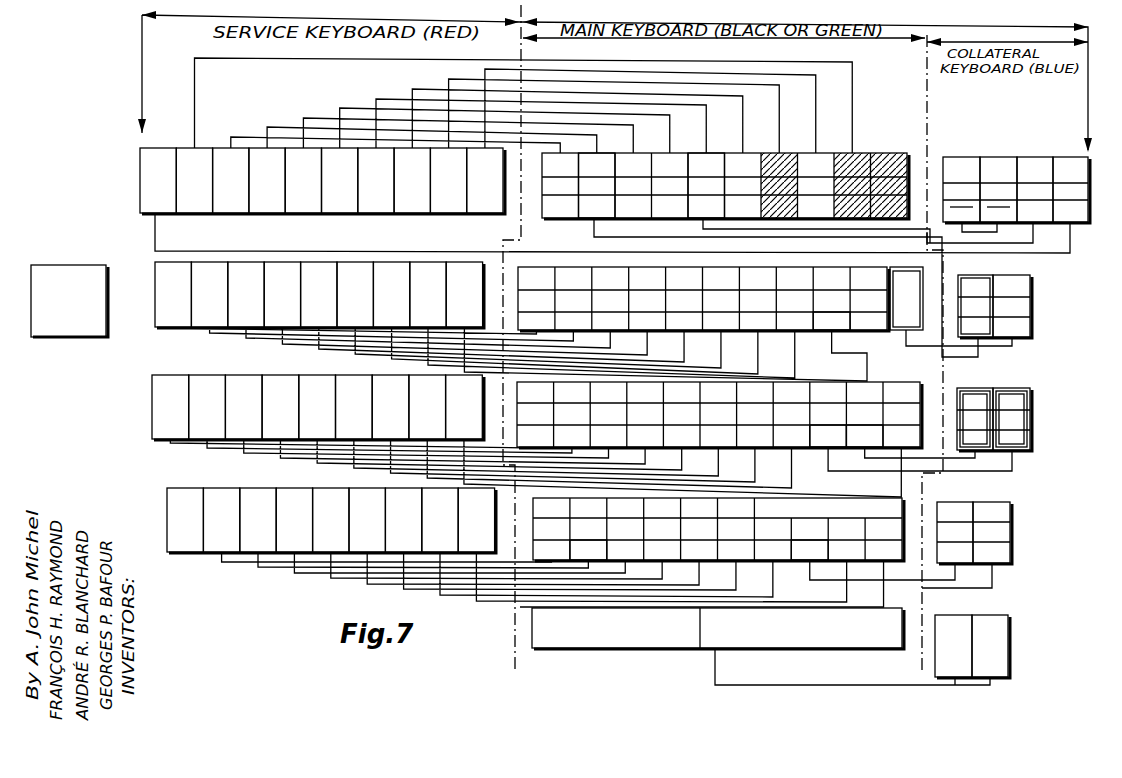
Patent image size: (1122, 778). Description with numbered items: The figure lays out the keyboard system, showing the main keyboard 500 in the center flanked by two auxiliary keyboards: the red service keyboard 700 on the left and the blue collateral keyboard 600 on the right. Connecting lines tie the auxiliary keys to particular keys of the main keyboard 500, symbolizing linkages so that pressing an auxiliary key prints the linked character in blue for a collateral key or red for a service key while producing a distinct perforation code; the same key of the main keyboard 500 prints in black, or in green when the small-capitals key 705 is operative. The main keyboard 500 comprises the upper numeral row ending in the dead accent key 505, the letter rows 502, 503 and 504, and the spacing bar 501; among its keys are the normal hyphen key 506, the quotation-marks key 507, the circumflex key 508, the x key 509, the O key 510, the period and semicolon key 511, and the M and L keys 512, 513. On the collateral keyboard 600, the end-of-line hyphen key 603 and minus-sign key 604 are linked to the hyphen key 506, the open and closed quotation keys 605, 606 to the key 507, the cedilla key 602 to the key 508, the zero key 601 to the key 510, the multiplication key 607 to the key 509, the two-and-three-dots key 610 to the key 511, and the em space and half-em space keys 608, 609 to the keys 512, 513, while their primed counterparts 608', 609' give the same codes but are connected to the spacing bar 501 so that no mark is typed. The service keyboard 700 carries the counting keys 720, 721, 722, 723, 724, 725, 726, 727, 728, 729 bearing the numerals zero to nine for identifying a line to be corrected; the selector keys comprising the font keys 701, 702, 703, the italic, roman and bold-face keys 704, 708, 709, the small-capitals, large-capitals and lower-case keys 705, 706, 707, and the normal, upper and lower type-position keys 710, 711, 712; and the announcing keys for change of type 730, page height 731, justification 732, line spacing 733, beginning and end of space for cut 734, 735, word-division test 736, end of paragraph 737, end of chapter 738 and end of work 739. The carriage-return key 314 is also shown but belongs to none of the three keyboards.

The carriage-return key 314 is at (97, 329).
The counting key 720 is at (150, 209).
The counting key 721 is at (190, 207).
The counting key 722 is at (234, 205).
The counting key 723 is at (271, 208).
The counting key 724 is at (307, 206).
The counting key 725 is at (343, 208).
The counting key 726 is at (380, 206).
The counting key 727 is at (416, 208).
The counting key 728 is at (453, 206).
The counting key 729 is at (490, 207).
The font selector key 701 is at (165, 320).
The font selector key 702 is at (206, 318).
The font selector key 703 is at (239, 318).
The word-division-test announcing key 736 is at (292, 289).
The beginning-of-space-for-cut announcing key 734 is at (328, 296).
The end-of-space-for-cut announcing key 735 is at (366, 282).
The lower type-position selector key 712 is at (404, 300).
The bold-face selector key 709 is at (440, 287).
The small-capitals selector key 705 is at (476, 299).
The height-of-page announcing key 731 is at (250, 402).
The end-of-paragraph announcing key 737 is at (289, 409).
The end-of-chapter announcing key 738 is at (327, 402).
The end-of-work announcing key 739 is at (364, 414).
The upper type-position selector key 711 is at (396, 401).
The italic selector key 704 is at (438, 406).
The large-capitals selector key 706 is at (474, 411).
The change-in-type announcing key 730 is at (307, 517).
The justification announcing key 732 is at (343, 525).
The line-spacing announcing key 733 is at (380, 517).
The normal type-position selector key 710 is at (415, 525).
The roman selector key 708 is at (452, 518).
The lower-case selector key 707 is at (489, 525).
The service keyboard 700 is at (331, 544).
The dead key 505 is at (725, 206).
The quotation-marks key 507 is at (587, 206).
The normal hyphen key 506 is at (703, 213).
The main keyboard AZERTY row 502 is at (535, 270).
The O key 510 is at (822, 329).
The circumflex accent key 508 is at (898, 331).
The main keyboard QSDF row 503 is at (710, 440).
The L key 513 is at (818, 442).
The M key 512 is at (860, 438).
The main keyboard WXCVBN row 504 is at (688, 554).
The x key 509 is at (581, 548).
The period and semicolon key 511 is at (798, 561).
The main keyboard 500 is at (718, 642).
The spacing bar 501 is at (815, 633).
The end-of-line hyphen key 603 is at (958, 161).
The minus-sign key 604 is at (1000, 148).
The modified open quotation mark key 605 is at (1034, 166).
The modified closed quotation mark key 606 is at (1070, 164).
The cedilla key 602 is at (980, 269).
The zero key 601 is at (1017, 278).
The em space key 608 is at (973, 407).
The half-em space key 609 is at (1011, 407).
The multiplication sign key 607 is at (958, 494).
The two-and-three-dots key 610 is at (1007, 493).
The collateral keyboard 600 is at (994, 522).
The em space key 608' is at (952, 635).
The half-em space key 609' is at (991, 634).